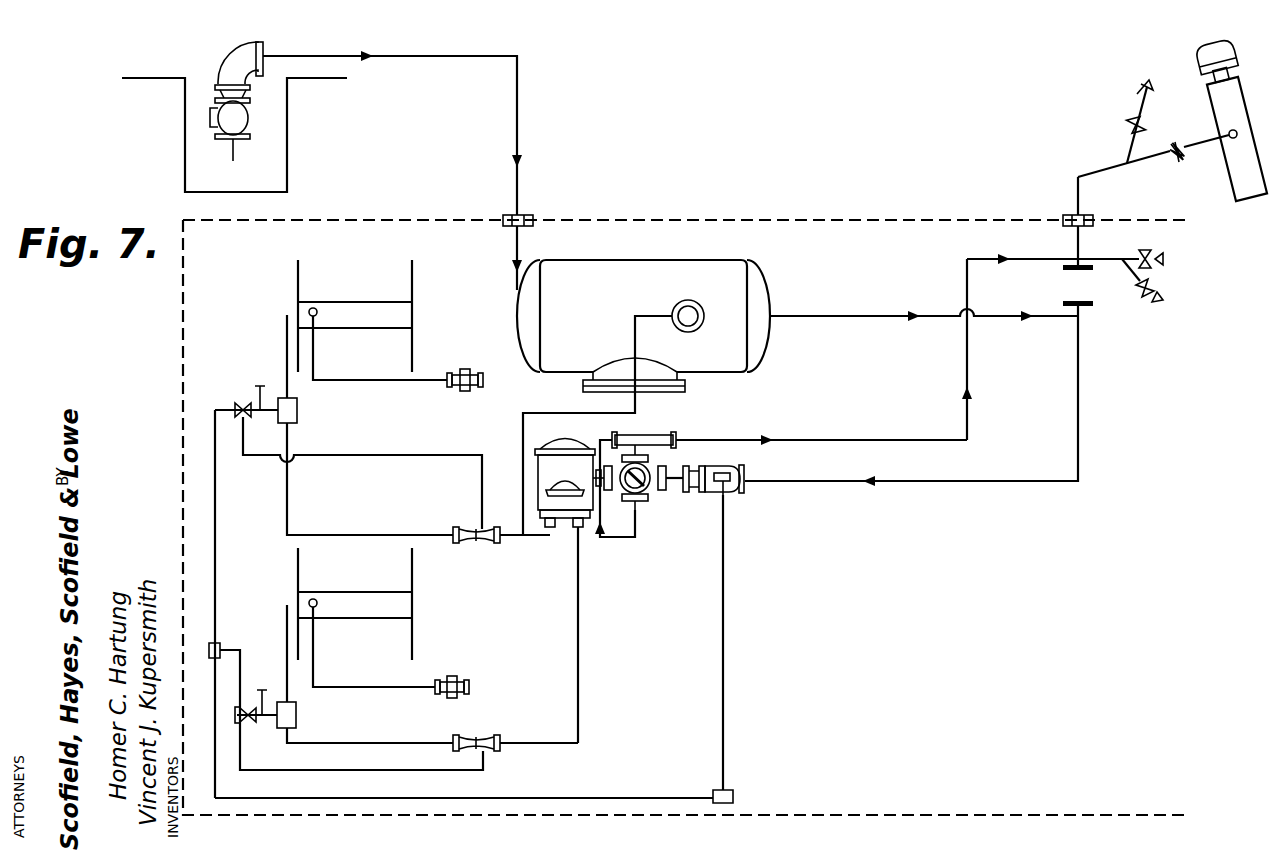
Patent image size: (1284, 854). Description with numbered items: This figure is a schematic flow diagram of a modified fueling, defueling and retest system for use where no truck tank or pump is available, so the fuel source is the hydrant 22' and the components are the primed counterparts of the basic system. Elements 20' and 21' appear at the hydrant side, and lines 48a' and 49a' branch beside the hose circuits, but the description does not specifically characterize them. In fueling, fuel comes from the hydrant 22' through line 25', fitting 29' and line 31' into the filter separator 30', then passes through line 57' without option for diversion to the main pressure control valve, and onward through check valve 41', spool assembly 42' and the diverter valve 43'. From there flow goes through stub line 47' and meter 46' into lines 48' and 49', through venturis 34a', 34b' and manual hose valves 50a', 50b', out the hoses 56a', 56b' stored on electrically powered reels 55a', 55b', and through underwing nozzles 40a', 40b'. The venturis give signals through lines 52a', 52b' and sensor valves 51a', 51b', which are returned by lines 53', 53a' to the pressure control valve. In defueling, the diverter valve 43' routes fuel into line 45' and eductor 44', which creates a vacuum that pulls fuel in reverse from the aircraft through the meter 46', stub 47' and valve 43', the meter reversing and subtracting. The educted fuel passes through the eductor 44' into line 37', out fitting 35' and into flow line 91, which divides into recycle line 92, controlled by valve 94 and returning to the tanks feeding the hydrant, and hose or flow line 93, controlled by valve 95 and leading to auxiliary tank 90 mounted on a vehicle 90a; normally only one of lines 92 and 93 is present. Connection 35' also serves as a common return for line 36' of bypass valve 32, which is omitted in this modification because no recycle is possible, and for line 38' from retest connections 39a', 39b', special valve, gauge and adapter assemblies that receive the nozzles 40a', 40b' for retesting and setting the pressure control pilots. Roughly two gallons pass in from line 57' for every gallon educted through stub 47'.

The system enclosure boundary 20' is at (685, 501).
The water supply tank 21' is at (234, 135).
The hydrant 22' is at (267, 101).
The hydrant line 25' is at (392, 133).
The fitting 29' is at (541, 205).
The filter separator 30' is at (643, 310).
The line 31' is at (496, 258).
The bypass valve 32 is at (736, 495).
The venturi 34a' is at (464, 555).
The venturi 34b' is at (493, 728).
The return connection fitting 35' is at (1060, 221).
The bypass return line 36' is at (1097, 248).
The defueling line 37' is at (1022, 342).
The retest line 38' is at (1087, 288).
The retest connection 39a' is at (1178, 260).
The retest connection 39b' is at (1170, 285).
The fueling nozzle 40a' is at (491, 381).
The fueling nozzle 40b' is at (468, 668).
The check valve 41' is at (720, 466).
The spool assembly 42' is at (693, 502).
The diverter valve 43' is at (645, 491).
The eductor 44' is at (789, 427).
The line 45' is at (627, 502).
The meter 46' is at (569, 470).
The stub line 47' is at (562, 477).
The meter line 48' is at (595, 444).
The chemical feed line 48a' is at (393, 418).
The meter line 49' is at (601, 635).
The chemical feed line 49a' is at (402, 660).
The manual hose valve 50a' is at (283, 411).
The manual hose valve 50b' is at (293, 715).
The sensor valve 51a' is at (237, 578).
The sensor valve 51b' is at (271, 730).
The signal line 52a' is at (362, 473).
The signal line 52b' is at (346, 719).
The signal return line 53' is at (464, 776).
The signal return line 53a' is at (755, 649).
The hose reel 55a' is at (355, 314).
The hose reel 55b' is at (355, 604).
The fueling hose 56a' is at (378, 344).
The fueling hose 56b' is at (372, 643).
The line 57' is at (911, 379).
The auxiliary tank 90 is at (1246, 152).
The vehicle 90a is at (1228, 48).
The flow line 91 is at (1100, 172).
The recycle line 92 is at (1124, 160).
The tank flow line 93 is at (1157, 160).
The valve 94 is at (1141, 124).
The valve 95 is at (1175, 152).